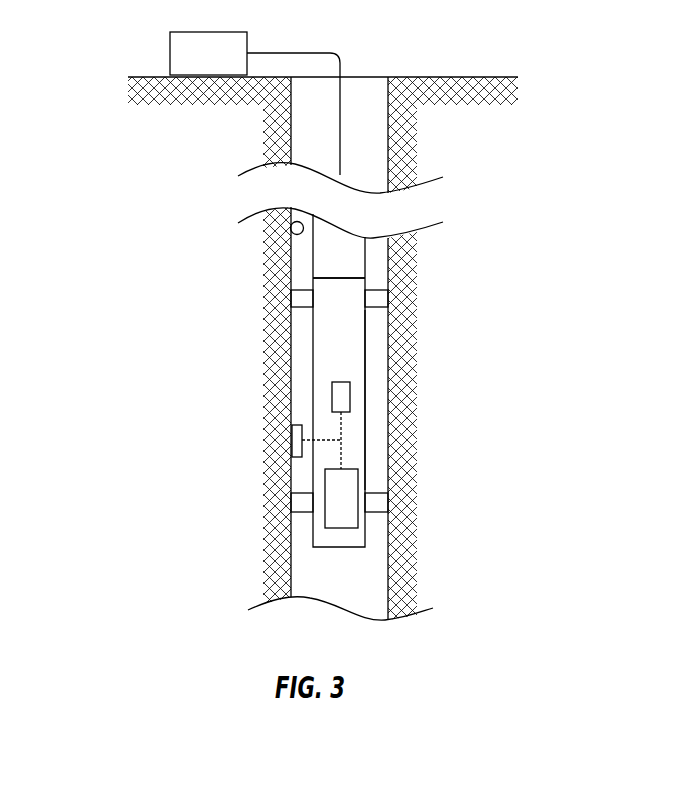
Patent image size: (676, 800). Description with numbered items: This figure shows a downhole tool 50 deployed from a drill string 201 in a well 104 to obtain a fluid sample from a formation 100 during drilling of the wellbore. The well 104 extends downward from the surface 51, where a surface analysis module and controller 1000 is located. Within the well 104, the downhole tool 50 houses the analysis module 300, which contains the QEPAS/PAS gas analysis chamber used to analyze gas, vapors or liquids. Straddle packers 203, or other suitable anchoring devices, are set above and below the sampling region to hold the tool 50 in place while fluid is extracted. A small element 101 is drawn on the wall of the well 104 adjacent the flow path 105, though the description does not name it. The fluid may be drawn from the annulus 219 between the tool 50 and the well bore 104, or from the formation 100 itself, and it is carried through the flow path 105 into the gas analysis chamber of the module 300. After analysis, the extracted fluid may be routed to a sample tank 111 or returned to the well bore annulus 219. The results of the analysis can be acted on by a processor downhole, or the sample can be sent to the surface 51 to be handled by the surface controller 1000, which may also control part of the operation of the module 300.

The surface 51 is at (138, 76).
The surface controller 1000 is at (233, 65).
The well 104 is at (292, 237).
The drill string 201 is at (343, 245).
The straddle packers 203 is at (298, 298).
The downhole tool 50 is at (328, 322).
The annulus 219 is at (377, 345).
The sample tank 111 is at (342, 393).
The flow path 105 is at (325, 440).
The sensor 101 is at (292, 438).
The analysis module 300 is at (335, 485).
The formation 100 is at (543, 427).